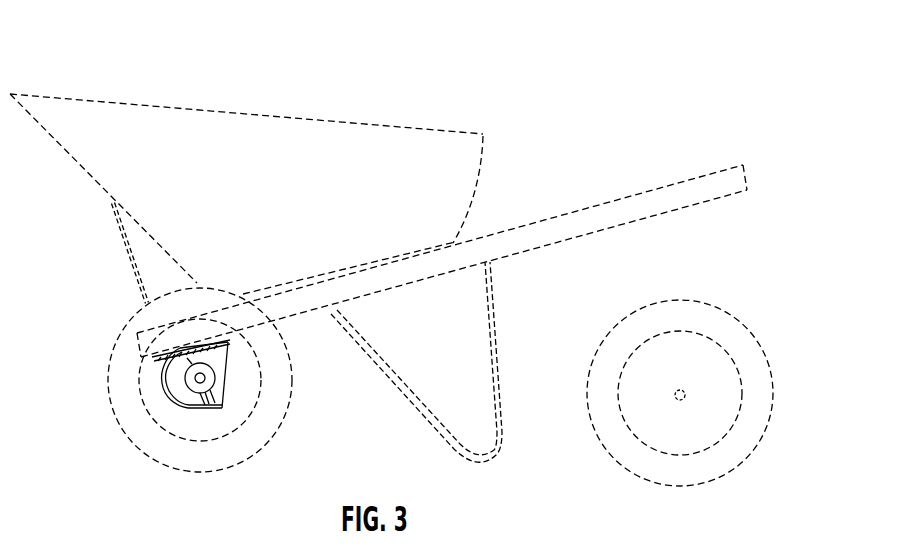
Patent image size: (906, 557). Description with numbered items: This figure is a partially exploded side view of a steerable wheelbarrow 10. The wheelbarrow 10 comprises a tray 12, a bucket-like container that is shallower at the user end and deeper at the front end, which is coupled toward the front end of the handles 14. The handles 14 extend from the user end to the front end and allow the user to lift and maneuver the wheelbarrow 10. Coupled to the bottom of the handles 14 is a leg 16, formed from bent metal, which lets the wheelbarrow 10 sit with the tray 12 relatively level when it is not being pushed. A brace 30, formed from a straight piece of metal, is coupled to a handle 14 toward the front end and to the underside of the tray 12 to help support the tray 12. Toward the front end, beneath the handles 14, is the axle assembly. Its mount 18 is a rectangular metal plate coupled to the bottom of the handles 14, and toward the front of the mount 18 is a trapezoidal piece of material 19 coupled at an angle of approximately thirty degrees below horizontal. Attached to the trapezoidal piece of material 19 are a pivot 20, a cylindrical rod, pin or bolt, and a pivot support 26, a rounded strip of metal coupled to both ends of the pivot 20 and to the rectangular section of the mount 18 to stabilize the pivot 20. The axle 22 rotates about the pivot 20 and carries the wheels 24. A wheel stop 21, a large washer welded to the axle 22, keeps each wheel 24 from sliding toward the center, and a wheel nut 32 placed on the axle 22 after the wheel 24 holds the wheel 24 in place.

The steerable wheelbarrow 10 is at (96, 38).
The tray 12 is at (485, 148).
The handle 14 is at (645, 202).
The leg 16 is at (497, 342).
The mount 18 is at (226, 373).
The trapezoidal piece of material 19 is at (160, 360).
The pivot 20 is at (222, 398).
The wheel stop 21 is at (203, 408).
The axle 22 is at (197, 378).
The wheel 24 is at (156, 442).
The pivot support 26 is at (187, 408).
The brace 30 is at (133, 262).
The wheel nut 32 is at (678, 401).